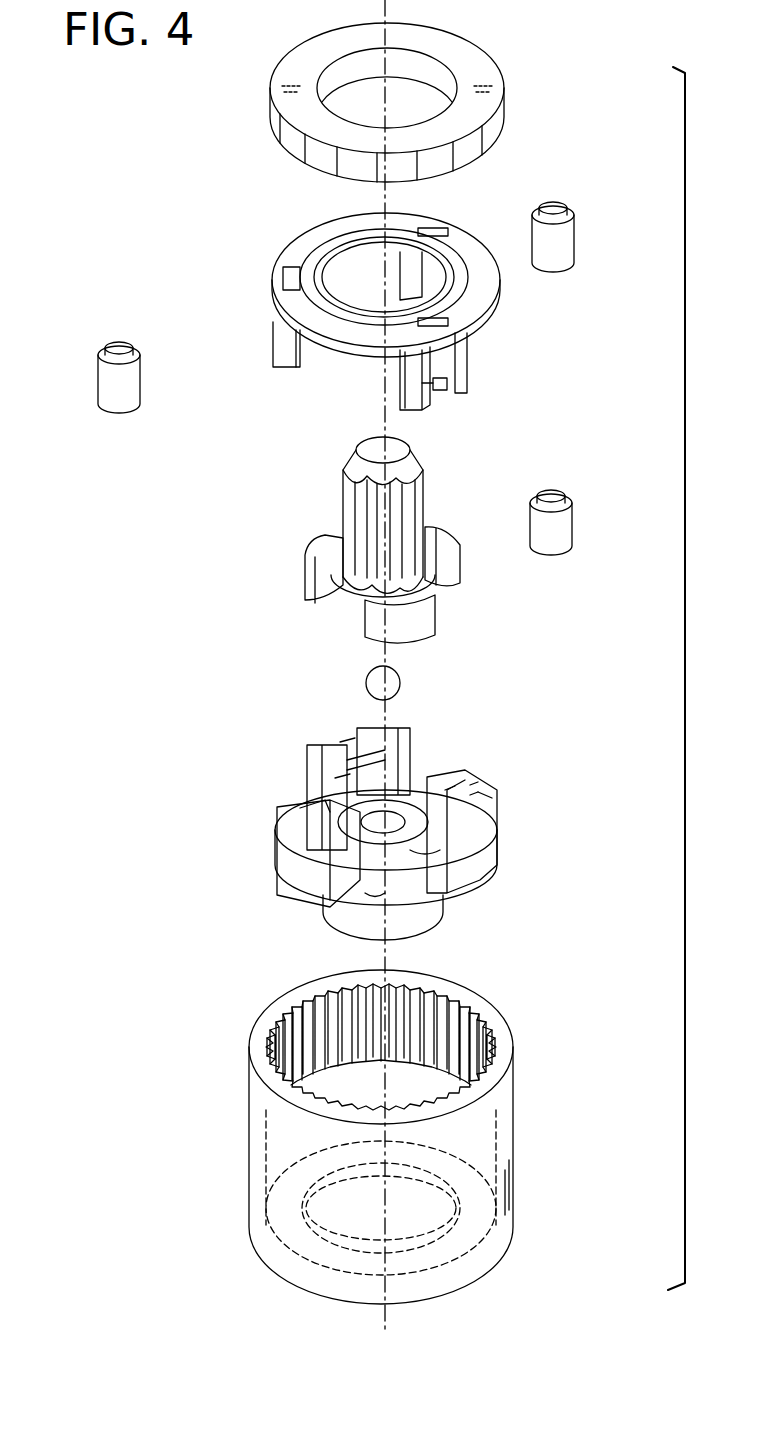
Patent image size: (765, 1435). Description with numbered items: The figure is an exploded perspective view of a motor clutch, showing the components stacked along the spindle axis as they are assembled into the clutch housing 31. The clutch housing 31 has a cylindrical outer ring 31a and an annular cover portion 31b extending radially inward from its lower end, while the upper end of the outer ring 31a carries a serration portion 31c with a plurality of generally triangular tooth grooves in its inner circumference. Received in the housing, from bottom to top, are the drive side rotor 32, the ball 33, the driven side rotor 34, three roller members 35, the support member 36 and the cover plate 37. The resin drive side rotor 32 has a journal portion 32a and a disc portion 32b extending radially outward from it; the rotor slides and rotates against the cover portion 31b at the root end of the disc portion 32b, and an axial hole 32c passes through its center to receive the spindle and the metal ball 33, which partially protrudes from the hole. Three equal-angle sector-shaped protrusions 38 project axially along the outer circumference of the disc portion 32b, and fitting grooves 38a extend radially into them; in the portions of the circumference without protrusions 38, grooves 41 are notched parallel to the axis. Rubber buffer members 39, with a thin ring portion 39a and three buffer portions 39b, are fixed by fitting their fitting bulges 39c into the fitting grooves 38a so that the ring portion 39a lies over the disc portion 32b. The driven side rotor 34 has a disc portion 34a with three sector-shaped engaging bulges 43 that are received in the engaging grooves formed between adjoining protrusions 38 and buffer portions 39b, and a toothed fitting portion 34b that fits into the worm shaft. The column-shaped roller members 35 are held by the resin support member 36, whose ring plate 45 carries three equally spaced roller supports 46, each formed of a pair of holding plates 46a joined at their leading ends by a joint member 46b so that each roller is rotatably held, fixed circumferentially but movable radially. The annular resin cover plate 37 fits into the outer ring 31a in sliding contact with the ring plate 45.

The clutch housing 31 is at (422, 1137).
The outer ring 31a is at (514, 1098).
The cover portion 31b is at (338, 1248).
The serration portion 31c is at (398, 1060).
The drive side rotor 32 is at (433, 818).
The journal portion 32a is at (345, 920).
The disc portion 32b is at (285, 868).
The axial hole 32c is at (405, 800).
The ball 33 is at (400, 684).
The driven side rotor 34 is at (382, 554).
The disc portion 34a is at (371, 580).
The fitting portion 34b is at (353, 505).
The roller members 35 is at (140, 385).
The support member 36 is at (384, 299).
The cover plate 37 is at (494, 83).
The protrusions 38 is at (325, 742).
The fitting grooves 38a is at (360, 740).
The buffer members 39 is at (322, 775).
The ring portion 39a is at (403, 850).
The buffer portions 39b is at (335, 775).
The fitting bulges 39c is at (305, 810).
The grooves 41 is at (375, 895).
The engaging bulges 43 is at (438, 542).
The ring plate 45 is at (352, 333).
The roller supports 46 is at (400, 270).
The holding plates 46a is at (467, 350).
The joint member 46b is at (447, 390).